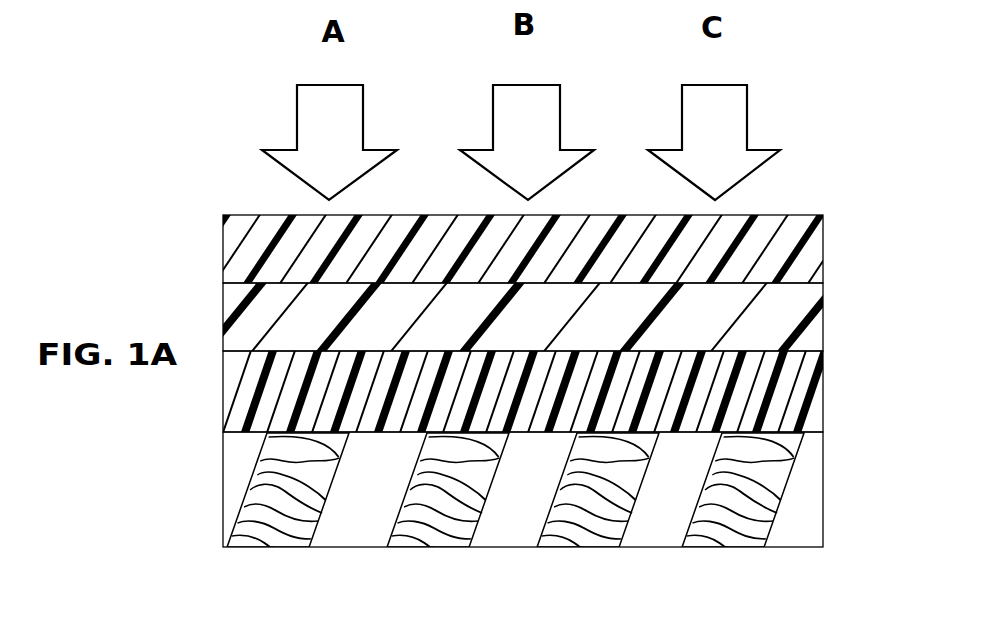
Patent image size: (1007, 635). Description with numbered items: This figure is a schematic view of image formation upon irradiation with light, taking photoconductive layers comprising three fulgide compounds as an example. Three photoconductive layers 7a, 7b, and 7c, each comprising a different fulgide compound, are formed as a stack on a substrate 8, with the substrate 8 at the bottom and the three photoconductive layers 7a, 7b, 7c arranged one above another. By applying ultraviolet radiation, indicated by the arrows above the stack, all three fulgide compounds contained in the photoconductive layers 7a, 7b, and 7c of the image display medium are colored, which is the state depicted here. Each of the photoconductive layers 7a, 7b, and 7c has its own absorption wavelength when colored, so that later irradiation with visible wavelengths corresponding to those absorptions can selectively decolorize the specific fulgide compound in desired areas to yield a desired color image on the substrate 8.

The photoconductive layer 7a is at (815, 266).
The photoconductive layer 7b is at (812, 338).
The photoconductive layer 7c is at (818, 413).
The substrate 8 is at (803, 517).